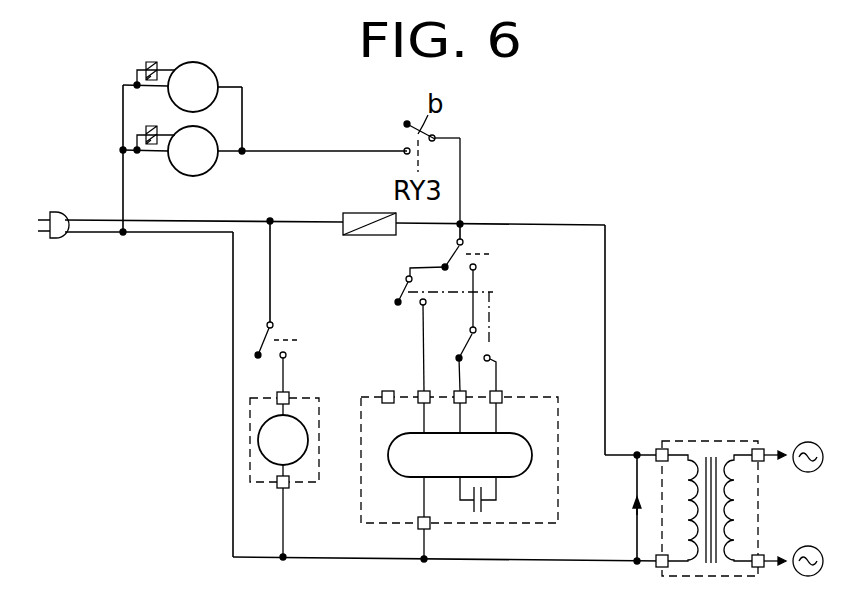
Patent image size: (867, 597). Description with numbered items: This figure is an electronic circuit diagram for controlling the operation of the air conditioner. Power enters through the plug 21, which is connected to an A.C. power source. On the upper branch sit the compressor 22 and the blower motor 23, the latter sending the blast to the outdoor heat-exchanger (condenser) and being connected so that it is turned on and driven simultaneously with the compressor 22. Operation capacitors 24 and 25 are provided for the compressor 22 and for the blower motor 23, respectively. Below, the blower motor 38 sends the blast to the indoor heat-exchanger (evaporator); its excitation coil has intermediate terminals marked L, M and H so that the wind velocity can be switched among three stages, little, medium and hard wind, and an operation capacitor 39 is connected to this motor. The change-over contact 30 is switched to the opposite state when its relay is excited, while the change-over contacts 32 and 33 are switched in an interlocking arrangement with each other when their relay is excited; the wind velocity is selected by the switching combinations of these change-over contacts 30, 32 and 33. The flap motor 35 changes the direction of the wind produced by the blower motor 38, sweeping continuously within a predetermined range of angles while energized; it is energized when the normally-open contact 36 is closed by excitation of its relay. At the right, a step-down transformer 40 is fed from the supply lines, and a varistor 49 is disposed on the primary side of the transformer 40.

The plug 21 is at (47, 211).
The compressor 22 is at (171, 168).
The blower motor 23 is at (213, 68).
The operation capacitor 24 is at (147, 125).
The operation capacitor 25 is at (151, 60).
The change-over contact 30 is at (453, 257).
The change-over contact 32 is at (403, 293).
The change-over contact 33 is at (477, 339).
The flap motor 35 is at (258, 443).
The normally-open contact 36 is at (266, 344).
The blower motor 38 is at (355, 213).
The operation capacitor 39 is at (483, 507).
The step-down transformer 40 is at (708, 456).
The varistor 49 is at (634, 506).